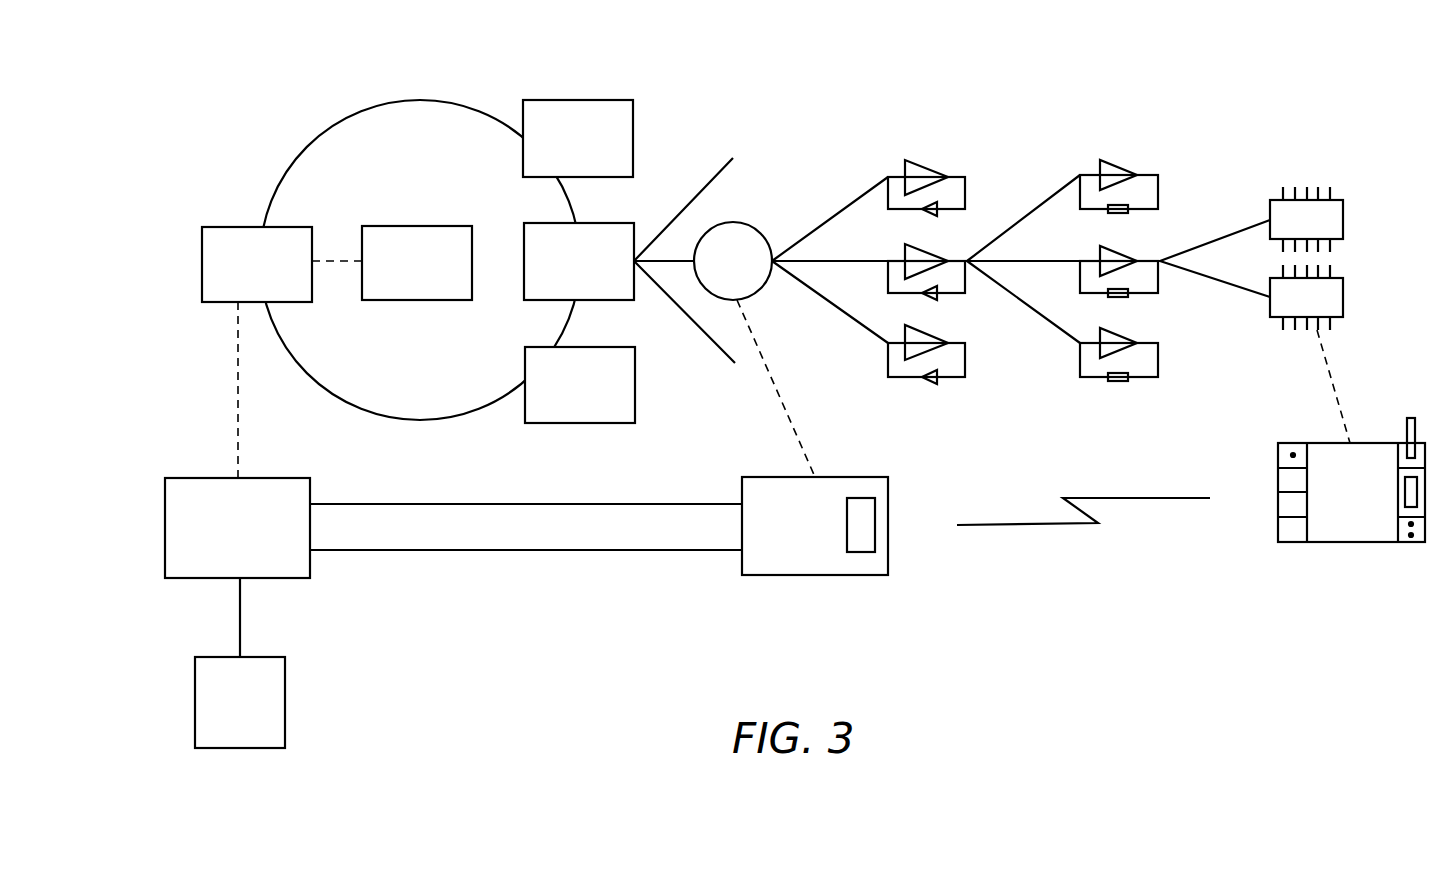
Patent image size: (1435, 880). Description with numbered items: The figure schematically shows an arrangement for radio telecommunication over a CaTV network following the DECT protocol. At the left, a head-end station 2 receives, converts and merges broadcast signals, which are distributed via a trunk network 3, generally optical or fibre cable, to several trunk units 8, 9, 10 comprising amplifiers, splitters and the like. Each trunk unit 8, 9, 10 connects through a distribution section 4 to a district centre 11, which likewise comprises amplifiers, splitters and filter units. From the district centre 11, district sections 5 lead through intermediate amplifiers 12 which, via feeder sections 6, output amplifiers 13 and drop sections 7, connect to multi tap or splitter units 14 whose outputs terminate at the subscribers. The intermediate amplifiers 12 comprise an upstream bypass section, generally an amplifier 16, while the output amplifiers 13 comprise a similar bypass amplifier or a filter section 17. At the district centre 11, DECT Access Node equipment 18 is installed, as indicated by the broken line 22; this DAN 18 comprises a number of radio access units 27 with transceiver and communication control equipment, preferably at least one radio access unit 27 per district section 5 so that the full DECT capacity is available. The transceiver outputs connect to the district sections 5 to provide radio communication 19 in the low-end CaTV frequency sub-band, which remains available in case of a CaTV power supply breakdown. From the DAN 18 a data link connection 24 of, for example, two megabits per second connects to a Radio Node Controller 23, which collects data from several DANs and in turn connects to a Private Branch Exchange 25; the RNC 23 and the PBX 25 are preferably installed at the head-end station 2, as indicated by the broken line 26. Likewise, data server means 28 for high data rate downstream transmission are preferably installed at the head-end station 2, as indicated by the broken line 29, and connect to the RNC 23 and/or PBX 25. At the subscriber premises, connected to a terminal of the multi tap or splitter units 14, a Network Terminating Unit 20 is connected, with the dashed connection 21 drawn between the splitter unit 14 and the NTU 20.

The head-end station 2 is at (222, 227).
The trunk network 3 is at (362, 107).
The distribution section 4 is at (731, 166).
The district section 5 is at (819, 231).
The feeder section 6 is at (1012, 232).
The drop section 7 is at (1232, 230).
The trunk unit 8 is at (633, 140).
The trunk unit 9 is at (607, 223).
The trunk unit 10 is at (635, 380).
The district centre 11 is at (748, 235).
The intermediate amplifier 12 is at (905, 160).
The output amplifier 13 is at (1098, 160).
The multi tap or splitter unit 14 is at (1343, 222).
The bypass amplifier 16 is at (927, 383).
The filter section 17 is at (1118, 382).
The DECT Access Node equipment 18 is at (888, 525).
The radio communication 19 is at (1098, 498).
The Network Terminating Unit 20 is at (1352, 542).
The radio connection 21 is at (1335, 380).
The broken line 22 is at (785, 408).
The Radio Node Controller 23 is at (165, 528).
The data link connection 24 is at (535, 543).
The Private Branch Exchange 25 is at (195, 703).
The broken line 26 is at (235, 408).
The radio access unit 27 is at (862, 498).
The data server means 28 is at (418, 226).
The broken line 29 is at (330, 261).